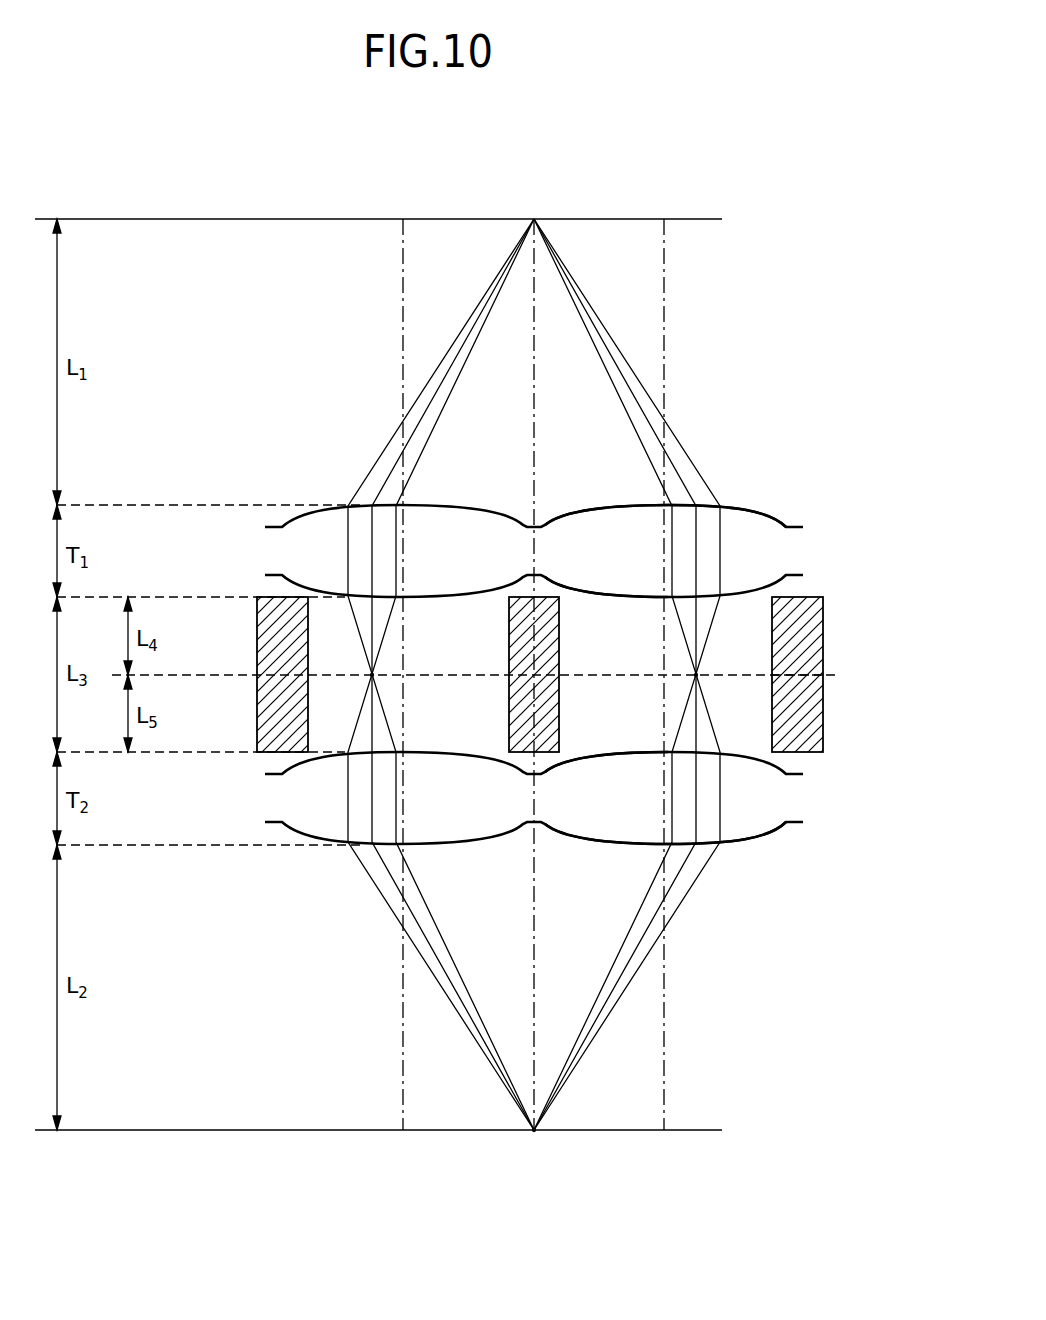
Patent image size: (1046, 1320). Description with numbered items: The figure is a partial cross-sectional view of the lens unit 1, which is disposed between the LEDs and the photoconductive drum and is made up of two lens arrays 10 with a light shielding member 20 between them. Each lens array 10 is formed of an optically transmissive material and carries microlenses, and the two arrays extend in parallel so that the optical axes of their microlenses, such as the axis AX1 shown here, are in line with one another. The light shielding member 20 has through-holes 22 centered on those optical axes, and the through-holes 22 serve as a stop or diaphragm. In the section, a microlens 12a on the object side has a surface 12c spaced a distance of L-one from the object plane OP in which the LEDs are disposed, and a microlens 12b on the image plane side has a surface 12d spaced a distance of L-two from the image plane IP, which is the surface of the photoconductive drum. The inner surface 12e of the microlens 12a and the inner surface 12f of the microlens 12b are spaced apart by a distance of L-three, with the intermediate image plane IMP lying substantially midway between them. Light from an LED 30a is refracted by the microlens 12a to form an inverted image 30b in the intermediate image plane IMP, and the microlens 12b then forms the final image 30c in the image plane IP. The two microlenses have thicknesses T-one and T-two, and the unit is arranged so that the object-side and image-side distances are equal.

The lens unit 1 is at (836, 465).
The lens array 10 is at (797, 548).
The microlens on the object side 12a is at (755, 505).
The microlens on the image plane side 12b is at (747, 822).
The surface of microlens 12a 12c is at (598, 505).
The surface of microlens 12b 12d is at (595, 845).
The surface of microlens 12a 12e is at (593, 597).
The surface of microlens 12b 12f is at (623, 752).
The light shielding member 20 is at (808, 617).
The through-hole 22 is at (760, 641).
The LED 30a is at (534, 661).
The inverted image 30b is at (372, 675).
The image 30c is at (533, 1147).
The optical axis AX1 is at (664, 330).
The object plane OP is at (398, 219).
The image plane IP is at (392, 1130).
The intermediate image plane IMP is at (497, 675).